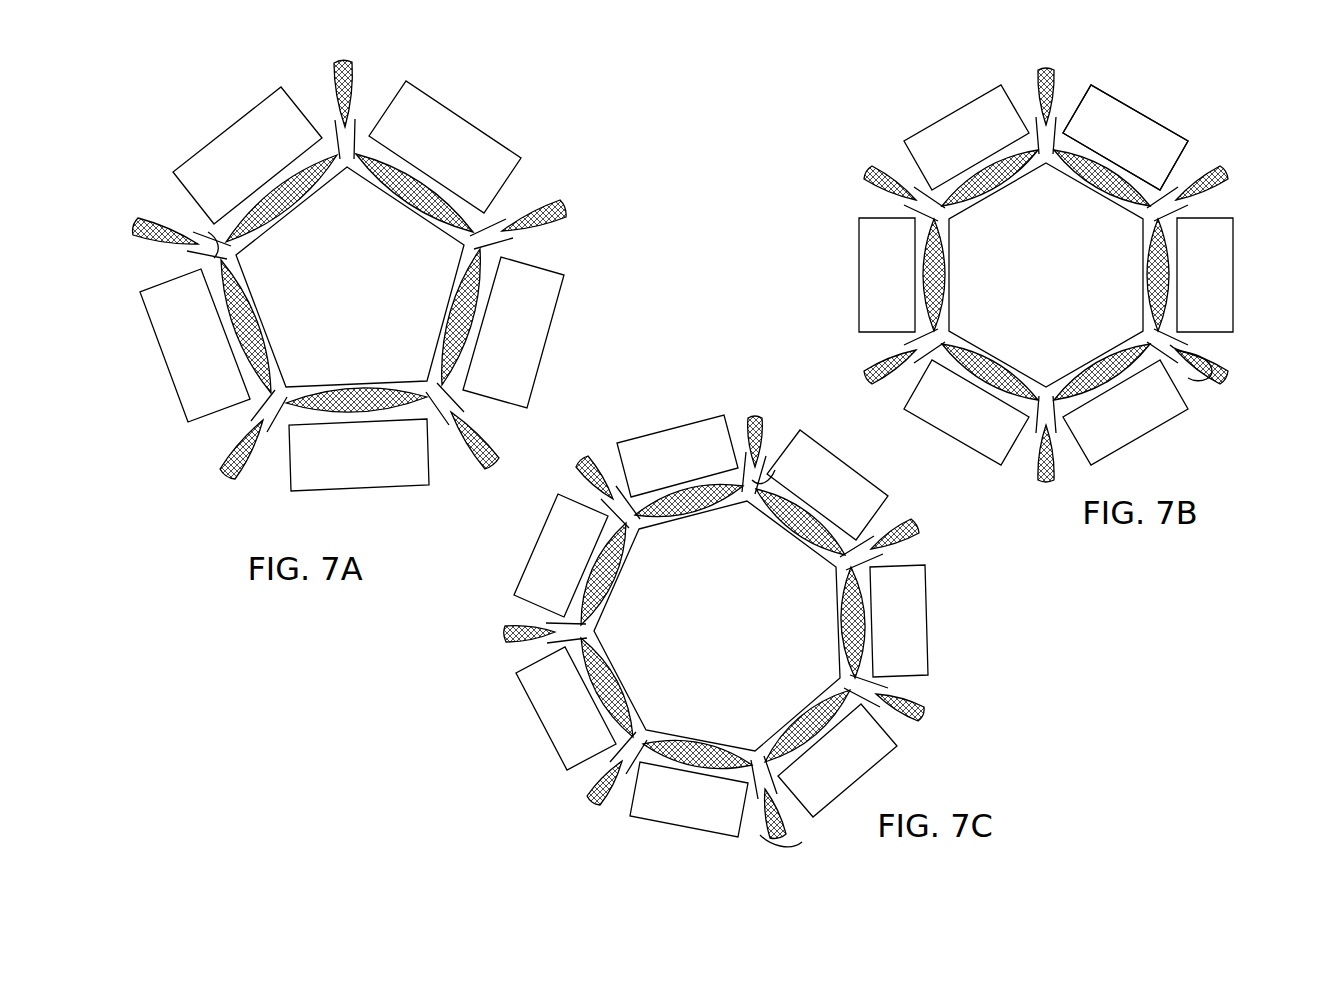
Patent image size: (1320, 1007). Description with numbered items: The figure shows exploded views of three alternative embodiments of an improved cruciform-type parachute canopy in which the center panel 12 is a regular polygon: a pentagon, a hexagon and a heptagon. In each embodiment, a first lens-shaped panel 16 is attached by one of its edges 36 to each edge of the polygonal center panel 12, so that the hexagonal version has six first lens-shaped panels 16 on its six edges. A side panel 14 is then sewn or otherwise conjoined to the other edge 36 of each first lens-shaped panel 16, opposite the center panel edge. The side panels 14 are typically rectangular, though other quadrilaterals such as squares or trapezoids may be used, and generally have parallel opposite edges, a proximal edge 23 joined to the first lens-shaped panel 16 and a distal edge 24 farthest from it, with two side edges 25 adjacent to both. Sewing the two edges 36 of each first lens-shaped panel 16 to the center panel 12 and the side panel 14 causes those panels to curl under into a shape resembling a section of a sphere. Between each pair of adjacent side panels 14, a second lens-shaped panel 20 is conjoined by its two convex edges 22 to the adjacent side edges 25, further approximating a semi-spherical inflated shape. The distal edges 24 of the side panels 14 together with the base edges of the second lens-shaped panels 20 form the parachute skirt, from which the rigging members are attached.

In FIG. 7A, the center panel 12 is at (360, 278).
In FIG. 7B, the center panel 12 is at (1050, 255).
In FIG. 7C, the center panel 12 is at (713, 637).
In FIG. 7A, the side panel 14 is at (520, 335).
In FIG. 7B, the side panel 14 is at (1213, 270).
In FIG. 7C, the side panel 14 is at (852, 750).
In FIG. 7A, the first lens-shaped panel 16 is at (430, 178).
In FIG. 7B, the first lens-shaped panel 16 is at (975, 172).
In FIG. 7C, the first lens-shaped panel 16 is at (595, 607).
In FIG. 7A, the second lens-shaped panel 20 is at (545, 190).
In FIG. 7B, the second lens-shaped panel 20 is at (870, 190).
In FIG. 7C, the second lens-shaped panel 20 is at (590, 800).
In FIG. 7A, the convex edge 22 is at (358, 92).
In FIG. 7B, the convex edge 22 is at (1040, 97).
In FIG. 7A, the proximal edge 23 is at (210, 238).
In FIG. 7B, the proximal edge 23 is at (1212, 362).
In FIG. 7C, the proximal edge 23 is at (775, 470).
In FIG. 7A, the distal edge 24 is at (230, 128).
In FIG. 7B, the distal edge 24 is at (1135, 108).
In FIG. 7C, the distal edge 24 is at (656, 828).
In FIG. 7A, the side edge 25 is at (396, 96).
In FIG. 7B, the side edge 25 is at (1081, 100).
In FIG. 7A, the edge of the first lens-shaped panel 36 is at (335, 130).
In FIG. 7B, the edge of the first lens-shaped panel 36 is at (1172, 208).
In FIG. 7C, the edge of the first lens-shaped panel 36 is at (750, 450).